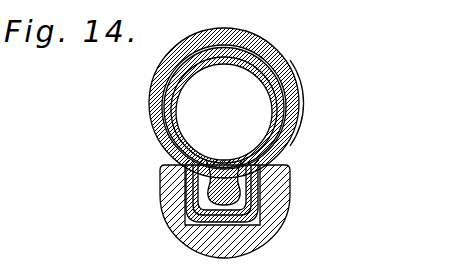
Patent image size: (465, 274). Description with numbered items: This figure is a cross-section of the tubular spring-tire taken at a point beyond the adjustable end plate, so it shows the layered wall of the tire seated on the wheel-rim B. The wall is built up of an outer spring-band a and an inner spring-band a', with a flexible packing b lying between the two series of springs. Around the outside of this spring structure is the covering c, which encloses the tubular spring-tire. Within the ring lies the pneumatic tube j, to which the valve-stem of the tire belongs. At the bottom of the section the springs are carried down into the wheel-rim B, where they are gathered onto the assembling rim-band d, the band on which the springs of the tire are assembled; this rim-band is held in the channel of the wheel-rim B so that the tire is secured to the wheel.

The outer spring-band a is at (232, 144).
The flexible packing b is at (161, 110).
The inner spring-band a' is at (232, 144).
The covering c is at (290, 108).
The pneumatic tube j is at (276, 139).
The assembling rim-band d is at (207, 200).
The wheel-rim B is at (290, 192).